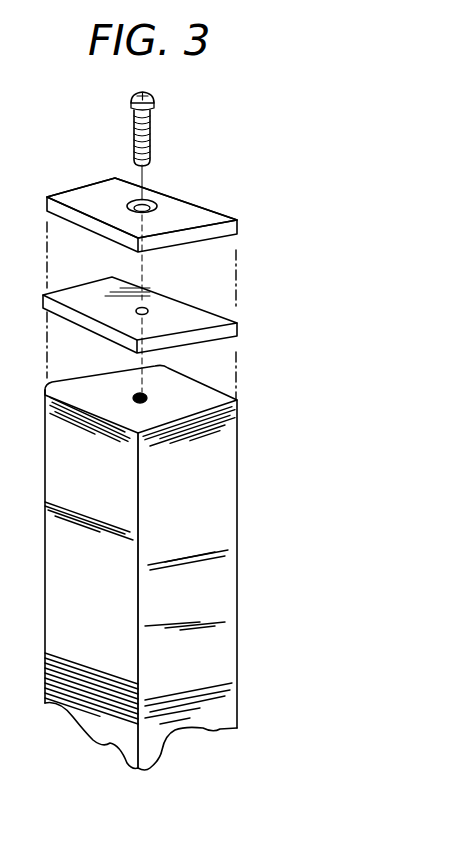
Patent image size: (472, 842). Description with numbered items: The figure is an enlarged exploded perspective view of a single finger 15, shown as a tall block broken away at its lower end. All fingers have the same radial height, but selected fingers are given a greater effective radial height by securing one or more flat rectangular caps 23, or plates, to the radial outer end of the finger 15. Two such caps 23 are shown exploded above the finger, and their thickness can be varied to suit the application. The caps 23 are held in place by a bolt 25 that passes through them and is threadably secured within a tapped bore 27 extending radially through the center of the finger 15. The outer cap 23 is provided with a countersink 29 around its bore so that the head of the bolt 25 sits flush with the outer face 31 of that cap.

The finger 15 is at (121, 559).
The cap 23 is at (122, 321).
The bolt 25 is at (151, 117).
The tapped bore 27 is at (140, 392).
The countersink 29 is at (153, 201).
The outer face 31 is at (85, 193).